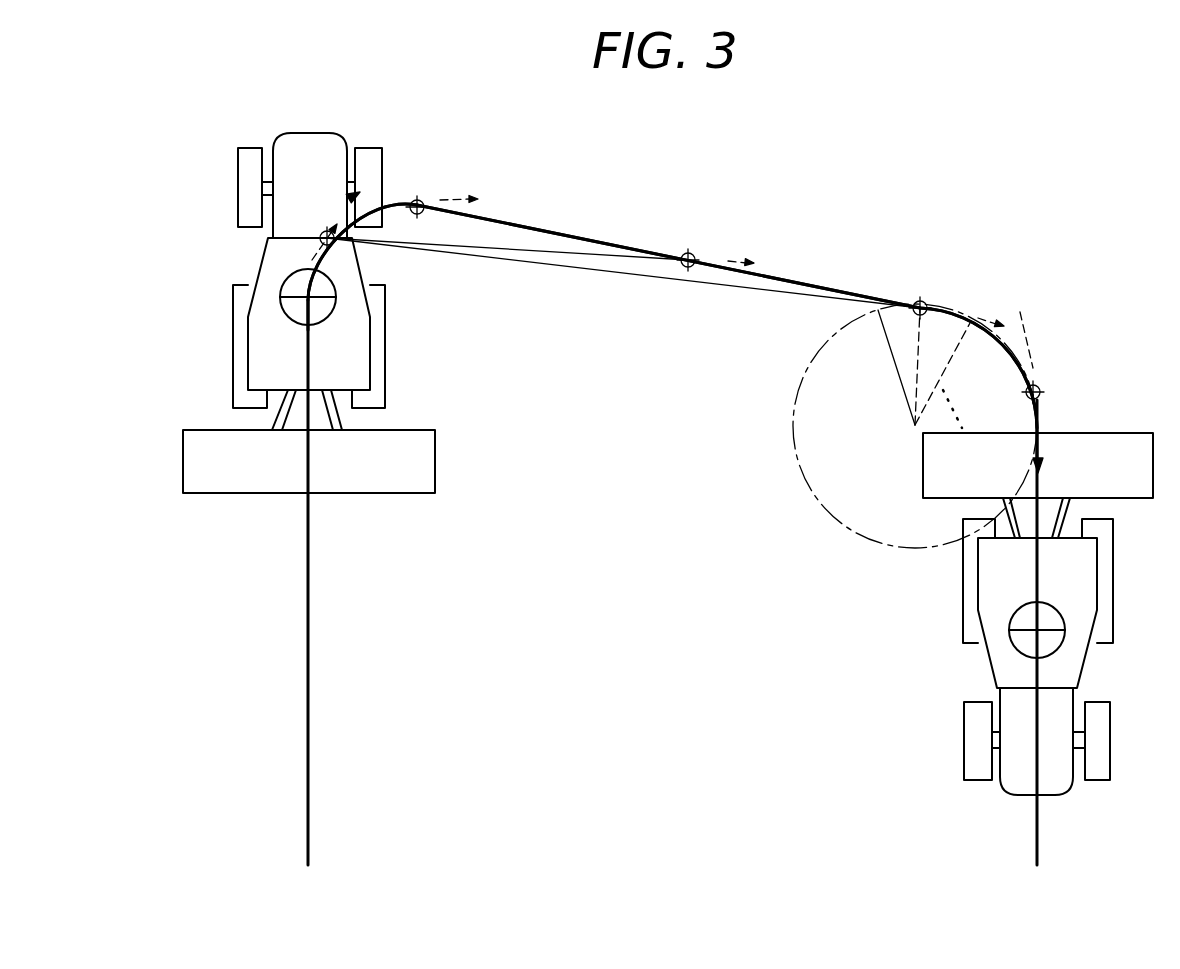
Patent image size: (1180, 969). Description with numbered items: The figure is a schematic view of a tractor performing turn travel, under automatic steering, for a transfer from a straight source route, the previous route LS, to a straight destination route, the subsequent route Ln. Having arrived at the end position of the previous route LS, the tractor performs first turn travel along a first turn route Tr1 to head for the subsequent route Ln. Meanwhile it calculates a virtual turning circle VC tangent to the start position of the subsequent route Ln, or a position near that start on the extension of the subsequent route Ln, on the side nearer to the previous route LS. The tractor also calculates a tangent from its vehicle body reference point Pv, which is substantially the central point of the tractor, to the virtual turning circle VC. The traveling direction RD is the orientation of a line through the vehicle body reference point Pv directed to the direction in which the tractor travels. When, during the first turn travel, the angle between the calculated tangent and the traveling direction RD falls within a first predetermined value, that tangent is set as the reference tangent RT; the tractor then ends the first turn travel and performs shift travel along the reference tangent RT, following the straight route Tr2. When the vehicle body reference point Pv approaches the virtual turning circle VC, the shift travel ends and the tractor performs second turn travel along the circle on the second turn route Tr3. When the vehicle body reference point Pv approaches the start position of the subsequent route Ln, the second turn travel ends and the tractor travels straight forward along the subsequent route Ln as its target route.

The vehicle body reference point Pv is at (327, 230).
The traveling direction RD is at (305, 262).
The reference tangent RT is at (572, 233).
The first turn route Tr1 is at (320, 256).
The straight route Tr2 is at (770, 270).
The second turn route Tr3 is at (991, 334).
The virtual turning circle VC is at (845, 532).
The previous route LS is at (308, 672).
The subsequent route Ln is at (1037, 833).